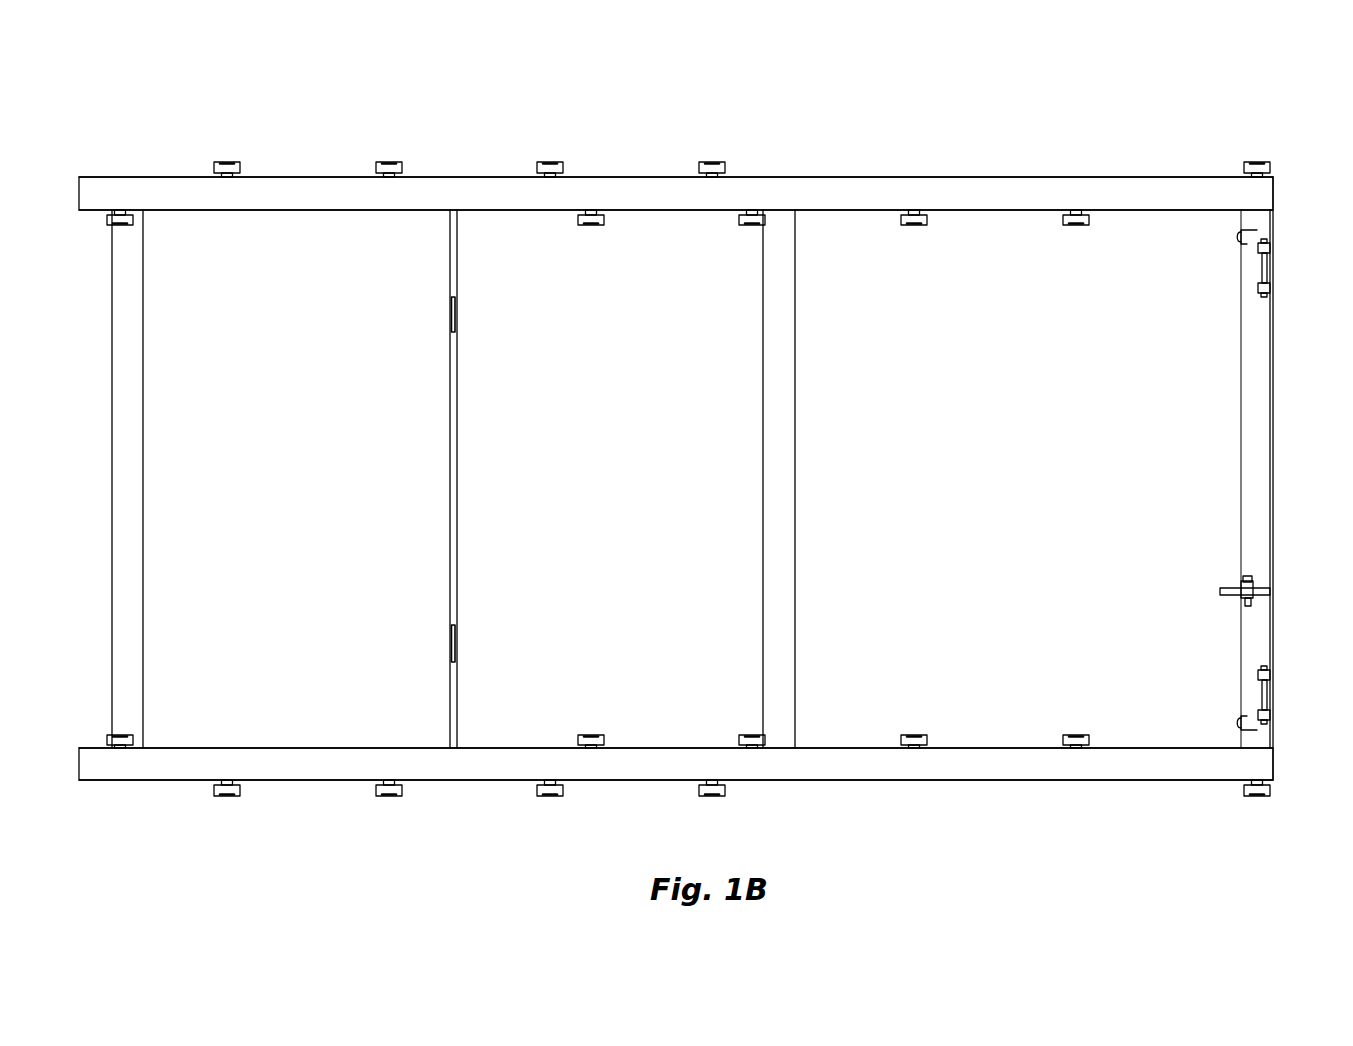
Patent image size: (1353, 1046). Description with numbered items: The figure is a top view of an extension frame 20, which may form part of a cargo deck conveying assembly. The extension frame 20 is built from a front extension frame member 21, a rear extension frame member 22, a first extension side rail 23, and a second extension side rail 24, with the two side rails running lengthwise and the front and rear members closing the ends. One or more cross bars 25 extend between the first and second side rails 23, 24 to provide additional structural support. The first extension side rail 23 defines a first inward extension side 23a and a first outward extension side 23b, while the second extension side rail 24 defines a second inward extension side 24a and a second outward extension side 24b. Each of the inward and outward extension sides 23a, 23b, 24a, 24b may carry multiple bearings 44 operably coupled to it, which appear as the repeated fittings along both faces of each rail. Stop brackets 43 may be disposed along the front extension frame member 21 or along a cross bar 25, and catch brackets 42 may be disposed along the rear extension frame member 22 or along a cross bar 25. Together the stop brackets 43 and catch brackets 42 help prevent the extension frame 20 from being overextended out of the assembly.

The extension frame 20 is at (1129, 105).
The front extension frame member 21 is at (1260, 370).
The rear extension frame member 22 is at (127, 326).
The first extension side rail 23 is at (833, 192).
The first inward extension side 23a is at (972, 210).
The first outward extension side 23b is at (972, 177).
The second extension side rail 24 is at (833, 767).
The second inward extension side 24a is at (972, 748).
The second outward extension side 24b is at (972, 780).
The cross bar 25 is at (786, 477).
The catch bracket 42 is at (458, 321).
The stop bracket 43 is at (1265, 275).
The bearing 44 is at (1085, 735).